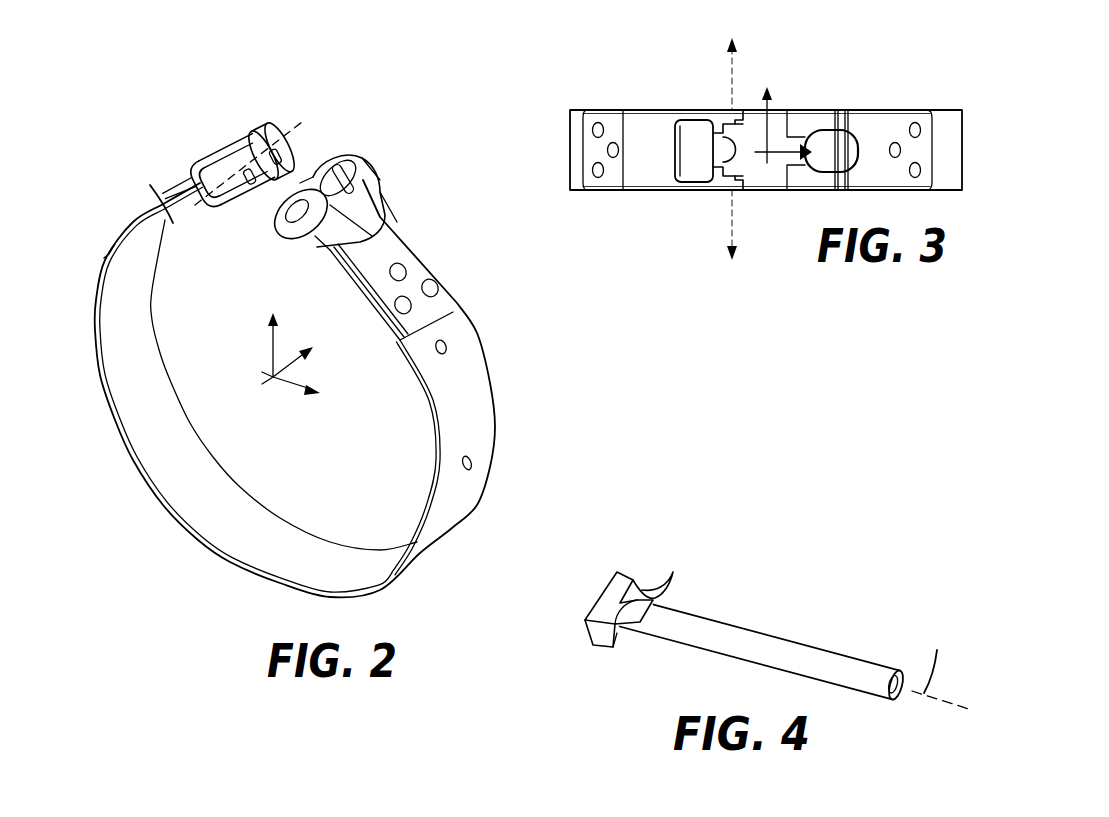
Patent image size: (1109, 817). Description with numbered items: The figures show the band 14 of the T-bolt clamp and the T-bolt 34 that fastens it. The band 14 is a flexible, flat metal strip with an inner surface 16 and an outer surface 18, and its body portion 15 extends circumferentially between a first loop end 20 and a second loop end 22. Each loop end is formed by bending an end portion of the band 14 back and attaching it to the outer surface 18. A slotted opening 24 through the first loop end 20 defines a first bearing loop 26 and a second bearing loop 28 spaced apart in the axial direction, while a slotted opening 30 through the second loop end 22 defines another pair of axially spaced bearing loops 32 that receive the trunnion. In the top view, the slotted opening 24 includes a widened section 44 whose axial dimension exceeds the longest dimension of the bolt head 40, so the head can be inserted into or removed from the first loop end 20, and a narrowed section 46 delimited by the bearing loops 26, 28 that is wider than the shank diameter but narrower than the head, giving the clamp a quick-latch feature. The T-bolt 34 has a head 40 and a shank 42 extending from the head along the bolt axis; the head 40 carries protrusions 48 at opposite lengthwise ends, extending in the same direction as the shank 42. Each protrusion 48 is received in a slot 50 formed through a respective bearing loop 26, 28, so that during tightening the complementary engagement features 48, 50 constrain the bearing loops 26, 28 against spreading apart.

In FIG. 2, the band 14 is at (117, 183).
In FIG. 3, the band 14 is at (567, 115).
In FIG. 2, the body portion 15 is at (203, 440).
In FIG. 2, the inner surface 16 is at (467, 363).
In FIG. 2, the outer surface 18 is at (288, 547).
In FIG. 2, the first loop end 20 is at (197, 210).
In FIG. 3, the first loop end 20 is at (642, 120).
In FIG. 2, the second loop end 22 is at (313, 233).
In FIG. 3, the second loop end 22 is at (822, 120).
In FIG. 2, the slotted opening 24 is at (240, 153).
In FIG. 3, the slotted opening 24 is at (685, 127).
In FIG. 2, the first bearing loop 26 is at (203, 178).
In FIG. 3, the first bearing loop 26 is at (740, 187).
In FIG. 2, the second bearing loop 28 is at (262, 135).
In FIG. 3, the second bearing loop 28 is at (720, 118).
In FIG. 2, the slotted opening 30 is at (347, 187).
In FIG. 2, the bearing loops 32 is at (337, 167).
In FIG. 4, the T-bolt 34 is at (615, 569).
In FIG. 4, the head 40 is at (600, 610).
In FIG. 4, the shank 42 is at (845, 668).
In FIG. 3, the widened section 44 is at (693, 183).
In FIG. 3, the narrowed section 46 is at (745, 138).
In FIG. 4, the protrusions 48 is at (674, 570).
In FIG. 2, the slots 50 is at (283, 167).
In FIG. 3, the slots 50 is at (746, 130).